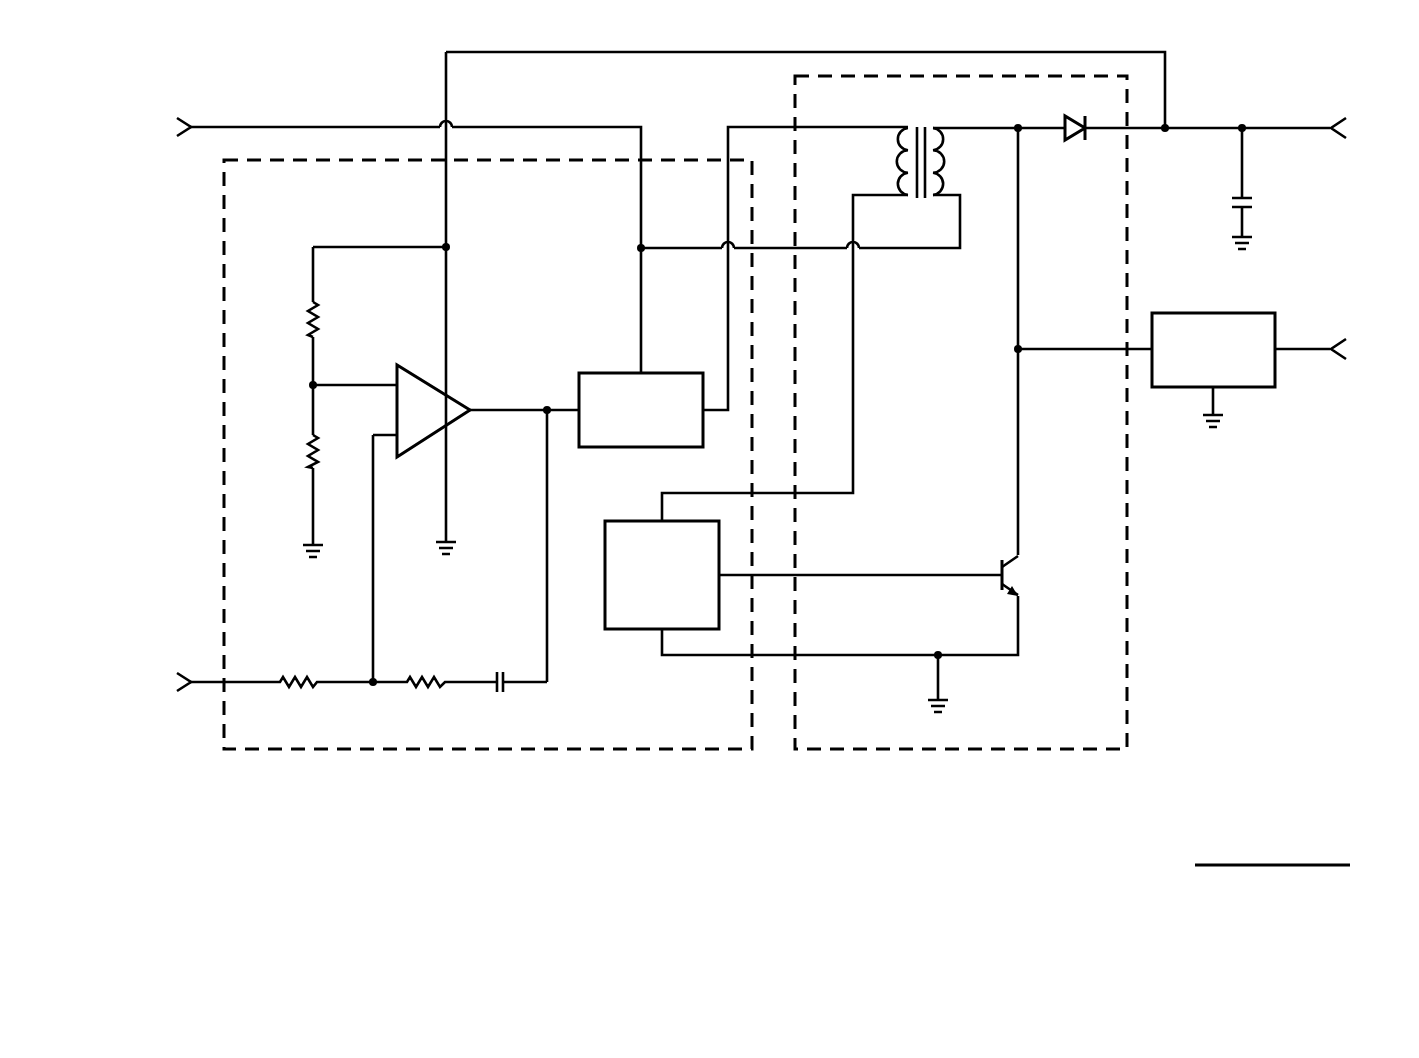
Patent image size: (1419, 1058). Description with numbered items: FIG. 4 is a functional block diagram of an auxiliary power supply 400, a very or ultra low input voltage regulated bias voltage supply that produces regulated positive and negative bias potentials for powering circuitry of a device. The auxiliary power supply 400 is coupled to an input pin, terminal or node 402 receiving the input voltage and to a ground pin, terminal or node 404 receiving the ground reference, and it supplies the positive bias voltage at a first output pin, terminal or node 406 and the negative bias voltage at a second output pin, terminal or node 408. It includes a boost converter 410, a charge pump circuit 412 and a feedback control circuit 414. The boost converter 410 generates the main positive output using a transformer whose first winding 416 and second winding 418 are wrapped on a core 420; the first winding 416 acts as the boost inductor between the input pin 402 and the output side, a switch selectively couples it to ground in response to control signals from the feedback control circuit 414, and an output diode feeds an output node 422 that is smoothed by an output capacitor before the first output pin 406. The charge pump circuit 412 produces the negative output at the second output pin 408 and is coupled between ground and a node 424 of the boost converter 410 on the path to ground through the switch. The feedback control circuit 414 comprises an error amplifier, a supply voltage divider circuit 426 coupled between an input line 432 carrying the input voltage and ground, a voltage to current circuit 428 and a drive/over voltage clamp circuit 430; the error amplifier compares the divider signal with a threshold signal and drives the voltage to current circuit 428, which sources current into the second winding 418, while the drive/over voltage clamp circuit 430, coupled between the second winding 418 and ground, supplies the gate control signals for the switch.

The auxiliary power supply 400 is at (1210, 614).
The input pin, terminal or node 402 is at (182, 124).
The ground pin, terminal or node 404 is at (930, 712).
The first output pin, terminal or node 406 is at (1331, 122).
The second output pin, terminal or node 408 is at (1331, 343).
The boost converter 410 is at (1067, 749).
The charge pump circuit 412 is at (1225, 312).
The feedback control circuit 414 is at (694, 749).
The first winding 416 is at (946, 153).
The second winding 418 is at (895, 170).
The core 420 is at (921, 124).
The output node 422 is at (1242, 126).
The node 424 is at (1016, 348).
The supply voltage divider circuit 426 is at (264, 390).
The voltage to current circuit 428 is at (607, 372).
The drive/over voltage clamp circuit 430 is at (633, 520).
The input line 432 is at (1166, 131).